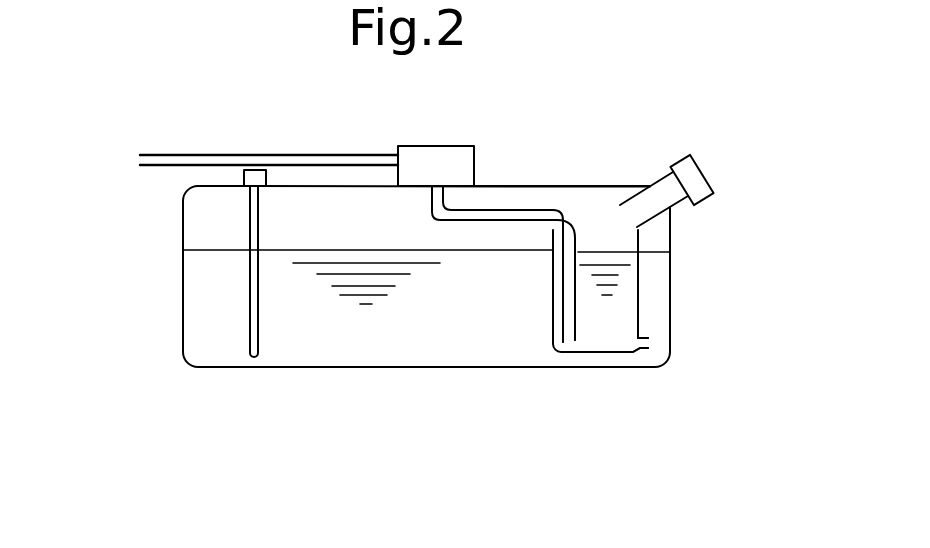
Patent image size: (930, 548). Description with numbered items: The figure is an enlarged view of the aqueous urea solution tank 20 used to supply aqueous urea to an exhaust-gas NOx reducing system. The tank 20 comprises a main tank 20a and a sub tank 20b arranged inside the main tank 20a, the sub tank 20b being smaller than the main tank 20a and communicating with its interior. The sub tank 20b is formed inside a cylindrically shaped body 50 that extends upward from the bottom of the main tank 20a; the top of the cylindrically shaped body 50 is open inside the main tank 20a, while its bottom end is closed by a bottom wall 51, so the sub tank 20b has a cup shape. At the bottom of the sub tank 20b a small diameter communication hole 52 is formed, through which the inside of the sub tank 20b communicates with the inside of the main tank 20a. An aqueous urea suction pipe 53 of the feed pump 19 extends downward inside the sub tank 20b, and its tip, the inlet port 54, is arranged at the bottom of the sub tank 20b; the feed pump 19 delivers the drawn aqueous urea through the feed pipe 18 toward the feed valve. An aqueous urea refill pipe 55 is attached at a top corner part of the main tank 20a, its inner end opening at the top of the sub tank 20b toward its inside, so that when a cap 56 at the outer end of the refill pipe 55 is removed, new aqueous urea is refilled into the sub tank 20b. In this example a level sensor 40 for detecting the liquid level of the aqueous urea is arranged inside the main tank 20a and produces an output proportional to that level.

The feed pipe 18 is at (210, 160).
The feed pump 19 is at (437, 163).
The aqueous urea solution tank 20 is at (164, 235).
The main tank 20a is at (525, 172).
The sub tank 20b is at (655, 283).
The level sensor 40 is at (253, 217).
The cylindrically shaped body 50 is at (552, 293).
The bottom wall 51 is at (603, 353).
The communication hole 52 is at (652, 341).
The aqueous urea suction pipe 53 is at (577, 231).
The inlet port 54 is at (571, 345).
The aqueous urea refill pipe 55 is at (657, 172).
The cap 56 is at (695, 172).